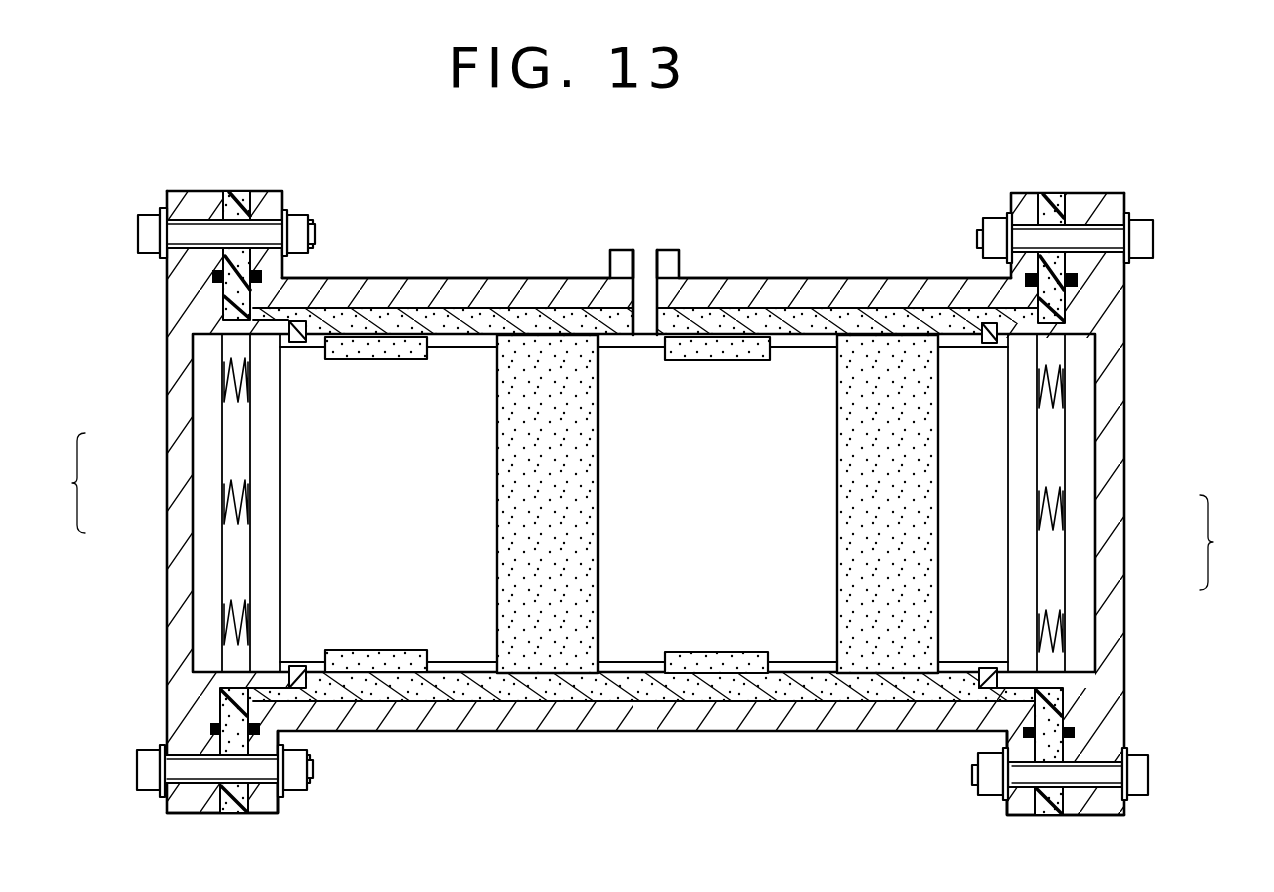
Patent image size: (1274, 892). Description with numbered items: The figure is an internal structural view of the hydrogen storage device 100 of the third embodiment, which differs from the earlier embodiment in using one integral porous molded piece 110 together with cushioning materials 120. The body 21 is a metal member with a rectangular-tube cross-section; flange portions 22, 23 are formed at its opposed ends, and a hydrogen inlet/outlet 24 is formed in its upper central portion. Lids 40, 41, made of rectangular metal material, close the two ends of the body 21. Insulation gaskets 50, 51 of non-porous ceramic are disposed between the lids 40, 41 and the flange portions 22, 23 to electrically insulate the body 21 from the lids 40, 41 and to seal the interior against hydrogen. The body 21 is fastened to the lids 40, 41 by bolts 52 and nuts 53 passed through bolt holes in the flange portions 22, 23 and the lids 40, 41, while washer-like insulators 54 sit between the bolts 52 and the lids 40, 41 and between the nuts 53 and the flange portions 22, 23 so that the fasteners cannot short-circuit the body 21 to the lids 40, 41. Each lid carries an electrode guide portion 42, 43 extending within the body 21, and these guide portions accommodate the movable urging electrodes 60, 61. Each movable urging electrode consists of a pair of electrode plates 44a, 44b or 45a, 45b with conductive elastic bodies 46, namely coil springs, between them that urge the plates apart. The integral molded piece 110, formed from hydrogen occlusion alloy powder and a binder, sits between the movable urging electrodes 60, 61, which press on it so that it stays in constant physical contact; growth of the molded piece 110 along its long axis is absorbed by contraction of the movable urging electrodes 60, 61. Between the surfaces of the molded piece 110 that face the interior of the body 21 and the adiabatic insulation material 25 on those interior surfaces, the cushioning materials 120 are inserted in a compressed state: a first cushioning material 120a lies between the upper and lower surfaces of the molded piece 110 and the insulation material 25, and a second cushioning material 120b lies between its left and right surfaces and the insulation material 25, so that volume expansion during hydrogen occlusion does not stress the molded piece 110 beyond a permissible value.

The hydrogen storage device 100 is at (533, 218).
The integral porous molded piece 110 is at (753, 534).
The cushioning material 120 is at (631, 504).
The first cushioning material 120a is at (387, 352).
The second cushioning material 120b is at (572, 611).
The body 21 is at (728, 277).
The flange portion 22 is at (1022, 193).
The flange portion 23 is at (277, 190).
The hydrogen inlet/outlet 24 is at (667, 250).
The adiabatic insulation material 25 is at (478, 318).
The lid 40 is at (1110, 193).
The lid 41 is at (195, 192).
The electrode guide portion 42 is at (985, 330).
The electrode guide portion 43 is at (297, 322).
The electrode plate 44a is at (1025, 458).
The electrode plate 44b is at (1082, 558).
The electrode plate 45a is at (265, 570).
The electrode plate 45b is at (207, 462).
The conductive elastic body 46 is at (232, 385).
The insulation gasket 50 is at (1048, 815).
The insulation gasket 51 is at (238, 813).
The bolt 52 is at (157, 215).
The nut 53 is at (308, 218).
The washer-like insulator 54 is at (283, 210).
The movable urging electrode 60 is at (1228, 542).
The movable urging electrode 61 is at (60, 483).